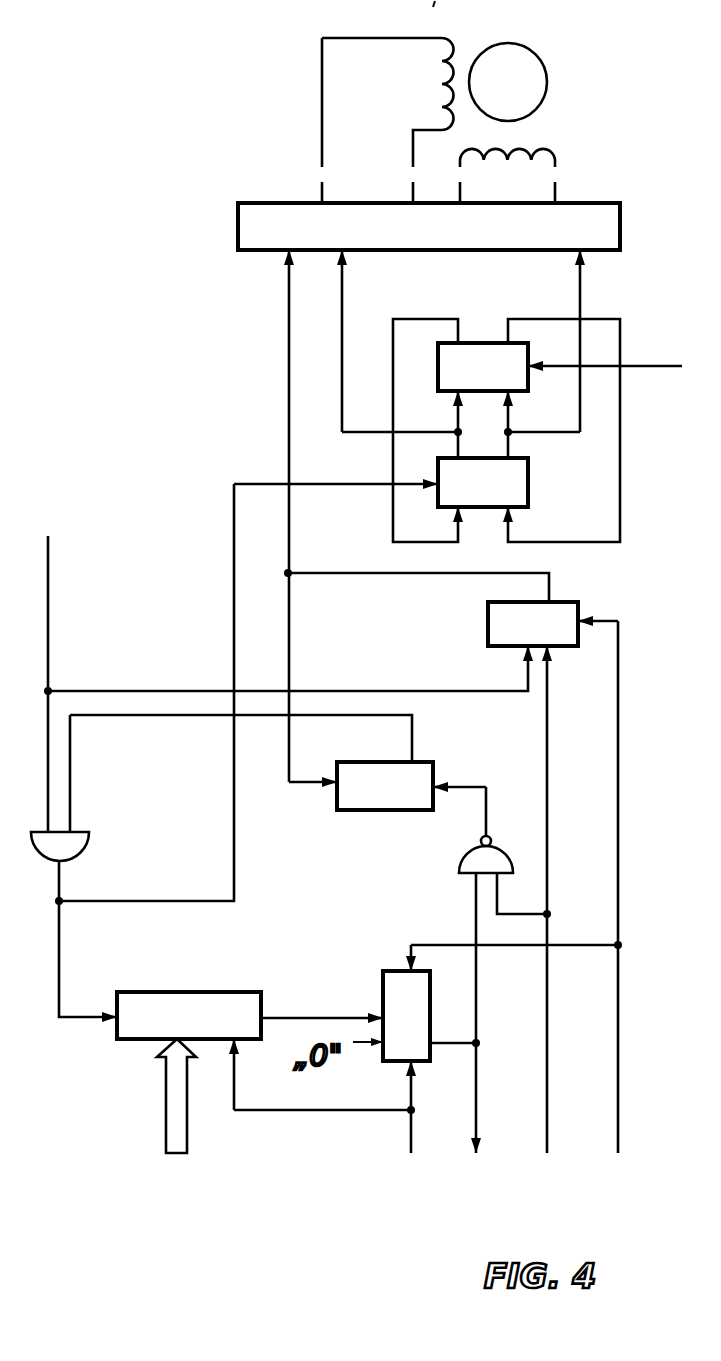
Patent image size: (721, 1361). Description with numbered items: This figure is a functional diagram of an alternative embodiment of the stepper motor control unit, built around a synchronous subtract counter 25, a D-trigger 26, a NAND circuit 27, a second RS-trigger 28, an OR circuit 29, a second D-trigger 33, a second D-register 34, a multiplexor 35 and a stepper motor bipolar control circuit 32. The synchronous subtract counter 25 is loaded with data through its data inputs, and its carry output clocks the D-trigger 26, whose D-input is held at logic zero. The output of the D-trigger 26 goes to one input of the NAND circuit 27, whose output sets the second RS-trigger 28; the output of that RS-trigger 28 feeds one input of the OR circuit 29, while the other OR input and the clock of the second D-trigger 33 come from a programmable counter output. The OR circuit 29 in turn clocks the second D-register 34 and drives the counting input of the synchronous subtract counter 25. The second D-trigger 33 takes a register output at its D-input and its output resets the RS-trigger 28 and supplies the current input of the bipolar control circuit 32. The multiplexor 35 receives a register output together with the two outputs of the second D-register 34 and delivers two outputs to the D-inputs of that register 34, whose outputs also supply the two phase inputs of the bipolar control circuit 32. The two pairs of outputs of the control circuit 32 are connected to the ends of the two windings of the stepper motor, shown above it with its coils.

The synchronous subtract counter 25 is at (189, 1015).
The D-trigger 26 is at (406, 1016).
The NAND circuit 27 is at (461, 858).
The second RS-trigger 28 is at (385, 786).
The OR circuit 29 is at (83, 847).
The stepper motor bipolar control circuit 32 is at (429, 227).
The second D-trigger 33 is at (533, 624).
The second D-register 34 is at (483, 482).
The multiplexor 35 is at (483, 367).